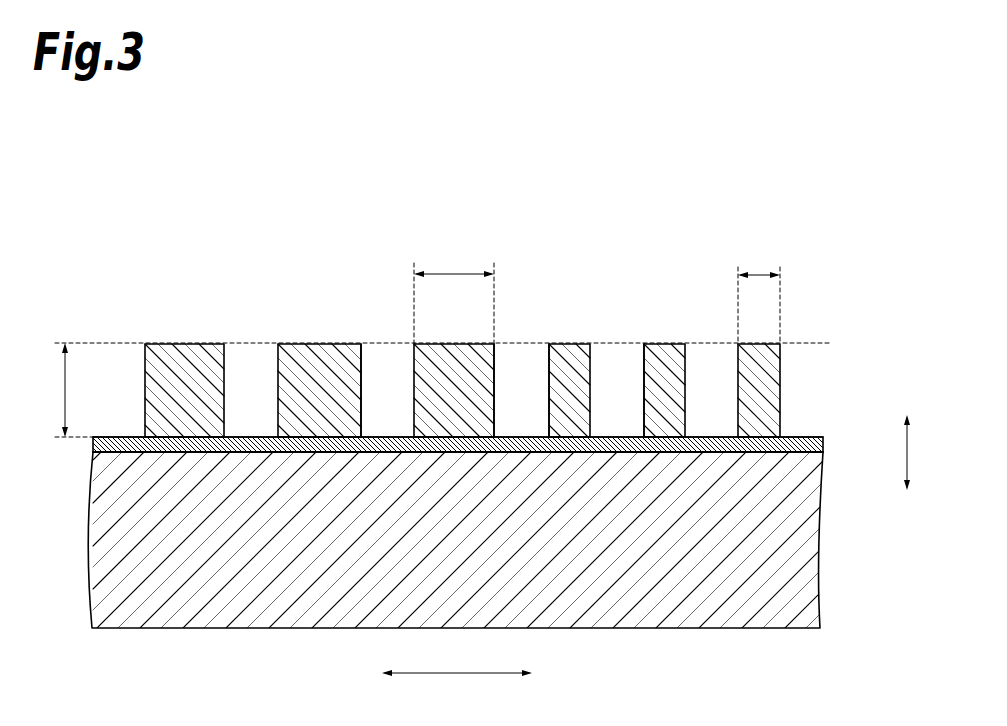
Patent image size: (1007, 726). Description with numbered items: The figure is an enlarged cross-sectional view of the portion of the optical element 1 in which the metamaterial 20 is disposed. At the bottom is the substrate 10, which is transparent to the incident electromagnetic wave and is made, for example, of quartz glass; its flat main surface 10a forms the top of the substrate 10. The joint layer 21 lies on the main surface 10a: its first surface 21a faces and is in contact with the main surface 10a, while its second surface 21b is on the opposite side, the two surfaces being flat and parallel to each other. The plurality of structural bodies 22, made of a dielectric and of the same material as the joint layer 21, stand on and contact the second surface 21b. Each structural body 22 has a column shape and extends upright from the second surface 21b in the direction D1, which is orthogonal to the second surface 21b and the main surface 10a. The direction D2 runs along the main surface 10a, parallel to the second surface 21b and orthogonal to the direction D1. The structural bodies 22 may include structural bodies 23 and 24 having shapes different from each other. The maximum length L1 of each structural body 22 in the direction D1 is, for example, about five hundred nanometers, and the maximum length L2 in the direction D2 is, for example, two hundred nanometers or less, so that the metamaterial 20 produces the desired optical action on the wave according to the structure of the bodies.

The optical element 1 is at (782, 207).
The substrate 10 is at (805, 540).
The main surface 10a is at (112, 448).
The metamaterial 20 is at (818, 365).
The joint layer 21 is at (823, 447).
The first surface 21a is at (208, 452).
The second surface 21b is at (250, 437).
The structural bodies 22 is at (146, 360).
The structural body 23 is at (553, 363).
The structural body 24 is at (352, 377).
The maximum length L1 is at (431, 390).
The maximum length L2 is at (597, 289).
The direction D1 is at (926, 452).
The direction D2 is at (457, 692).